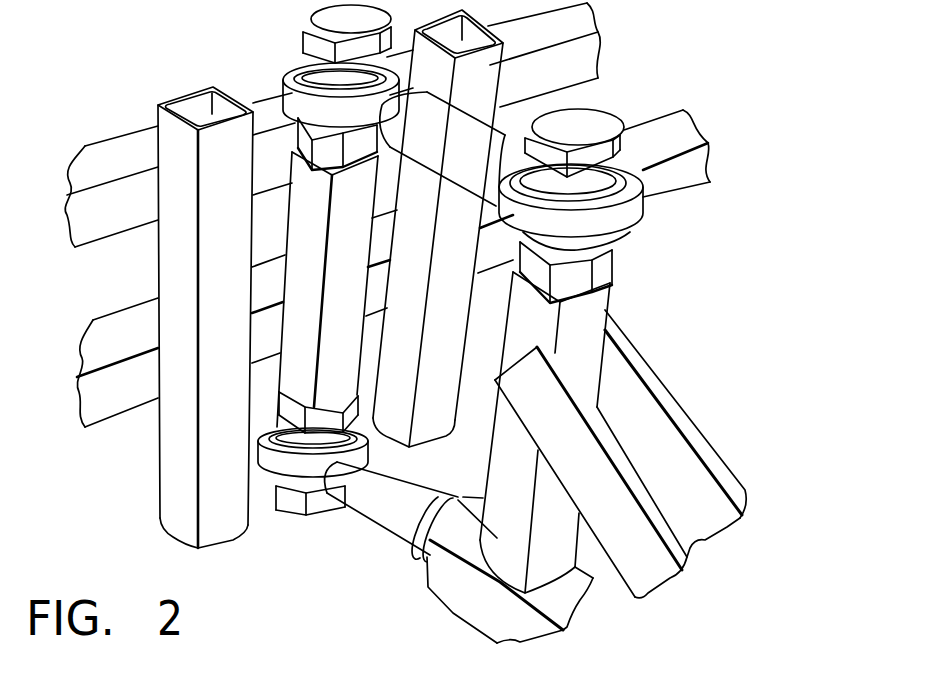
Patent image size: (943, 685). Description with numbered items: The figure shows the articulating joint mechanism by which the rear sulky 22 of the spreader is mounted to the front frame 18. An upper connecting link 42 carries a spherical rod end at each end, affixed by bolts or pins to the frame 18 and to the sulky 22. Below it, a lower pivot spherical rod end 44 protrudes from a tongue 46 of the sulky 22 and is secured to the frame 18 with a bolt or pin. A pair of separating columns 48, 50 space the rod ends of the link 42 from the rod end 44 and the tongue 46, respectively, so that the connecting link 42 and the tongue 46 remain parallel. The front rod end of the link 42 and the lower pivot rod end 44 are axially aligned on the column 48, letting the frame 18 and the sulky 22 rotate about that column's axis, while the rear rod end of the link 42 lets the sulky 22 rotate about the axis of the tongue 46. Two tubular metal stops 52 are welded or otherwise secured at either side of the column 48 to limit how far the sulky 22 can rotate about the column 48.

The front frame 18 is at (134, 216).
The rear sulky 22 is at (772, 293).
The upper connecting link 42 is at (640, 230).
The lower pivot spherical rod end 44 is at (288, 457).
The tongue 46 is at (497, 615).
The separating column 48 is at (368, 221).
The separating column 50 is at (582, 340).
The stops 52 is at (244, 243).